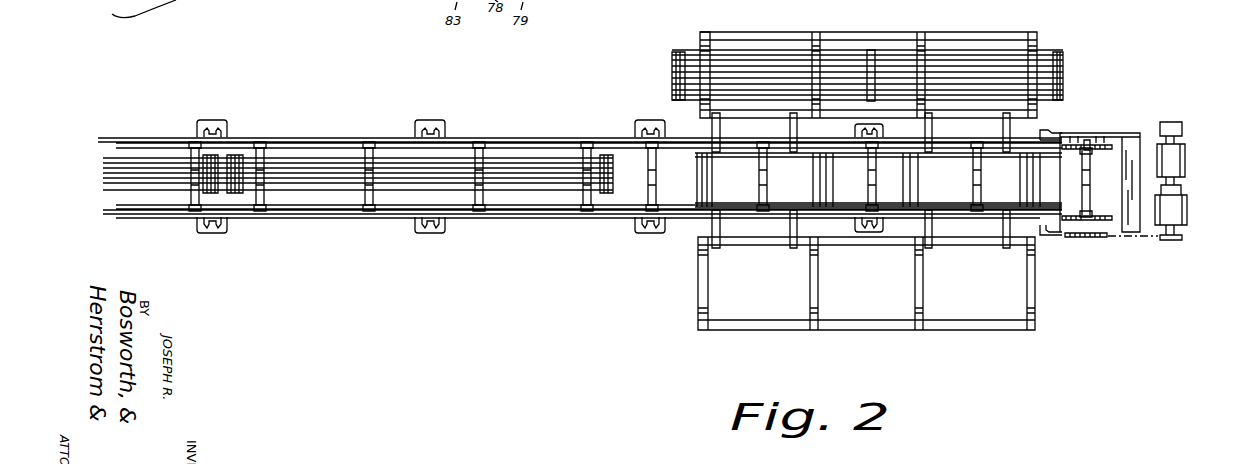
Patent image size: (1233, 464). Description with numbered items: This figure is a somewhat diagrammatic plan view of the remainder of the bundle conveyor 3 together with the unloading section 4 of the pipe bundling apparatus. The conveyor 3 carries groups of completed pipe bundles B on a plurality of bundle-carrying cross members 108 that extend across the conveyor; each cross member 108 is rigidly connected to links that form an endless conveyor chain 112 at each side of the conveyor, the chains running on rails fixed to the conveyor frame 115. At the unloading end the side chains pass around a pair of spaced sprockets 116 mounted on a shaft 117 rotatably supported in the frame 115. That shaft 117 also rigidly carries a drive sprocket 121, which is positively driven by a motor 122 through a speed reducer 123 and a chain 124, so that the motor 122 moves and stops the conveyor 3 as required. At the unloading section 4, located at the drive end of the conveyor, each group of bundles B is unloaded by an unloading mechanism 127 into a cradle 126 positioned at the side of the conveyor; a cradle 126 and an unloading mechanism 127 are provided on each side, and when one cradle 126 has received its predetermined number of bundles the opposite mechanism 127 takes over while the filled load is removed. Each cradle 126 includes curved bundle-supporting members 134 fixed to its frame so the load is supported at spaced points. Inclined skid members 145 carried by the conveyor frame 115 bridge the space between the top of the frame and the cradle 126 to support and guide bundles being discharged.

The conveyor 3 is at (580, 181).
The unloading section 4 is at (869, 180).
The bundle B is at (331, 177).
The bundle-carrying cross member 108 is at (468, 193).
The endless conveyor chain 112 is at (275, 139).
The conveyor frame 115 is at (212, 120).
The sprocket 116 is at (1106, 149).
The shaft 117 is at (1092, 146).
The drive sprocket 121 is at (1098, 238).
The motor 122 is at (1187, 189).
The speed reducer 123 is at (1185, 232).
The chain 124 is at (1150, 241).
The cradle 126 is at (893, 180).
The unloading mechanism 127 is at (697, 185).
The curved bundle-supporting member 134 is at (1038, 46).
The inclined skid member 145 is at (790, 129).